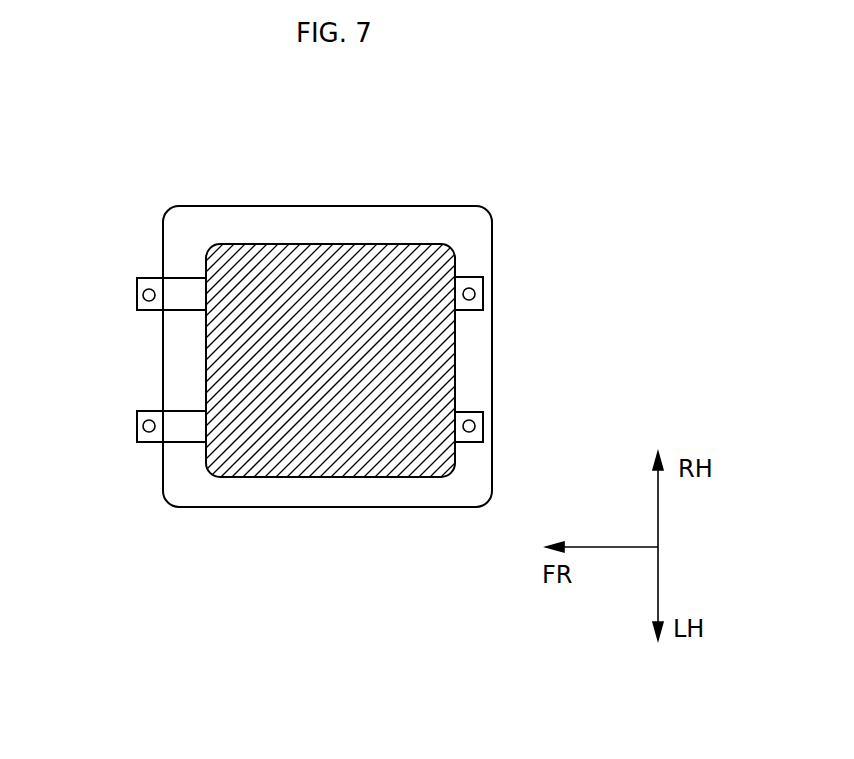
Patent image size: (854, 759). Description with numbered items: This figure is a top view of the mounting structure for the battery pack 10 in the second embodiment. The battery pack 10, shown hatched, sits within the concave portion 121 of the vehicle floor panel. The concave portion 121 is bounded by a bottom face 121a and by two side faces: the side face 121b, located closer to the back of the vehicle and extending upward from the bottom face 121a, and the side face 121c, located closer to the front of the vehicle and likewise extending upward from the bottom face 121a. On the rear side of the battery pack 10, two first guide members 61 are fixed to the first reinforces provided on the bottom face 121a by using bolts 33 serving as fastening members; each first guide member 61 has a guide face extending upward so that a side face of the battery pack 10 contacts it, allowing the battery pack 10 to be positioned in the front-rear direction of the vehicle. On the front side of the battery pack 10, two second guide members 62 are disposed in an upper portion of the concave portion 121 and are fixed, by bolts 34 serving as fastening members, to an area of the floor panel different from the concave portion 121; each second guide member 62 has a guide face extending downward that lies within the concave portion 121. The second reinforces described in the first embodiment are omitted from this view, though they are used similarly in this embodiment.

The battery pack 10 is at (394, 232).
The concave portion 121 is at (320, 510).
The bottom face 121a is at (222, 497).
The side face 121b is at (492, 358).
The side face 121c is at (163, 350).
The bolt 33 is at (475, 294).
The bolt 34 is at (143, 295).
The first guide member 61 is at (472, 278).
The second guide member 62 is at (183, 297).